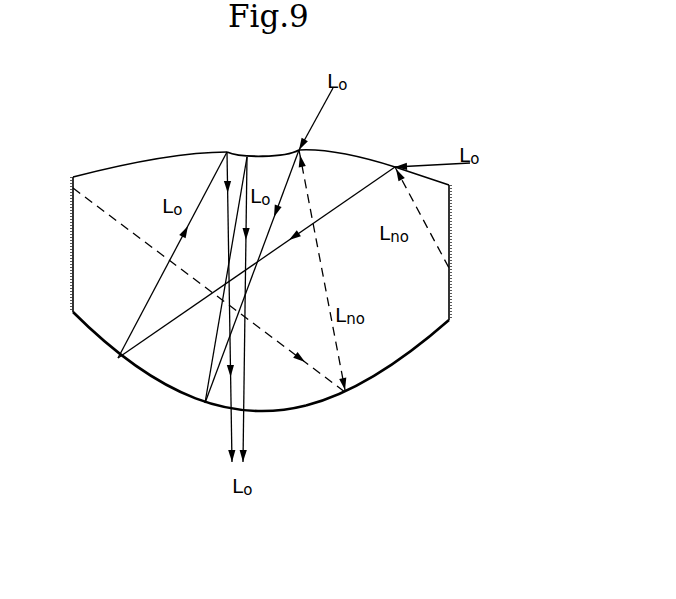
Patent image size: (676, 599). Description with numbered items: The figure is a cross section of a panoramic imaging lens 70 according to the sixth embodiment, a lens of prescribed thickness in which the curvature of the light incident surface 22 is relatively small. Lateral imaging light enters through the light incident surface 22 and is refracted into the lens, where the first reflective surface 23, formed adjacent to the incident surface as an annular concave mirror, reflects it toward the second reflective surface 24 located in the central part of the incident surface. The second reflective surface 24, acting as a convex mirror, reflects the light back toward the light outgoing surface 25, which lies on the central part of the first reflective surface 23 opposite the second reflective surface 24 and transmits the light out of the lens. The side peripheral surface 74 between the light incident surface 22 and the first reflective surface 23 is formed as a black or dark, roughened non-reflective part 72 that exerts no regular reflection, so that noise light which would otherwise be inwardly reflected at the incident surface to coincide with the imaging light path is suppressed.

The light incident surface 22 is at (357, 153).
The first reflective surface 23 is at (372, 388).
The second reflective surface 24 is at (275, 153).
The light outgoing surface 25 is at (275, 410).
The panoramic imaging lens 70 is at (493, 193).
The non-reflective part 72 is at (452, 265).
The side peripheral surface 74 is at (450, 292).